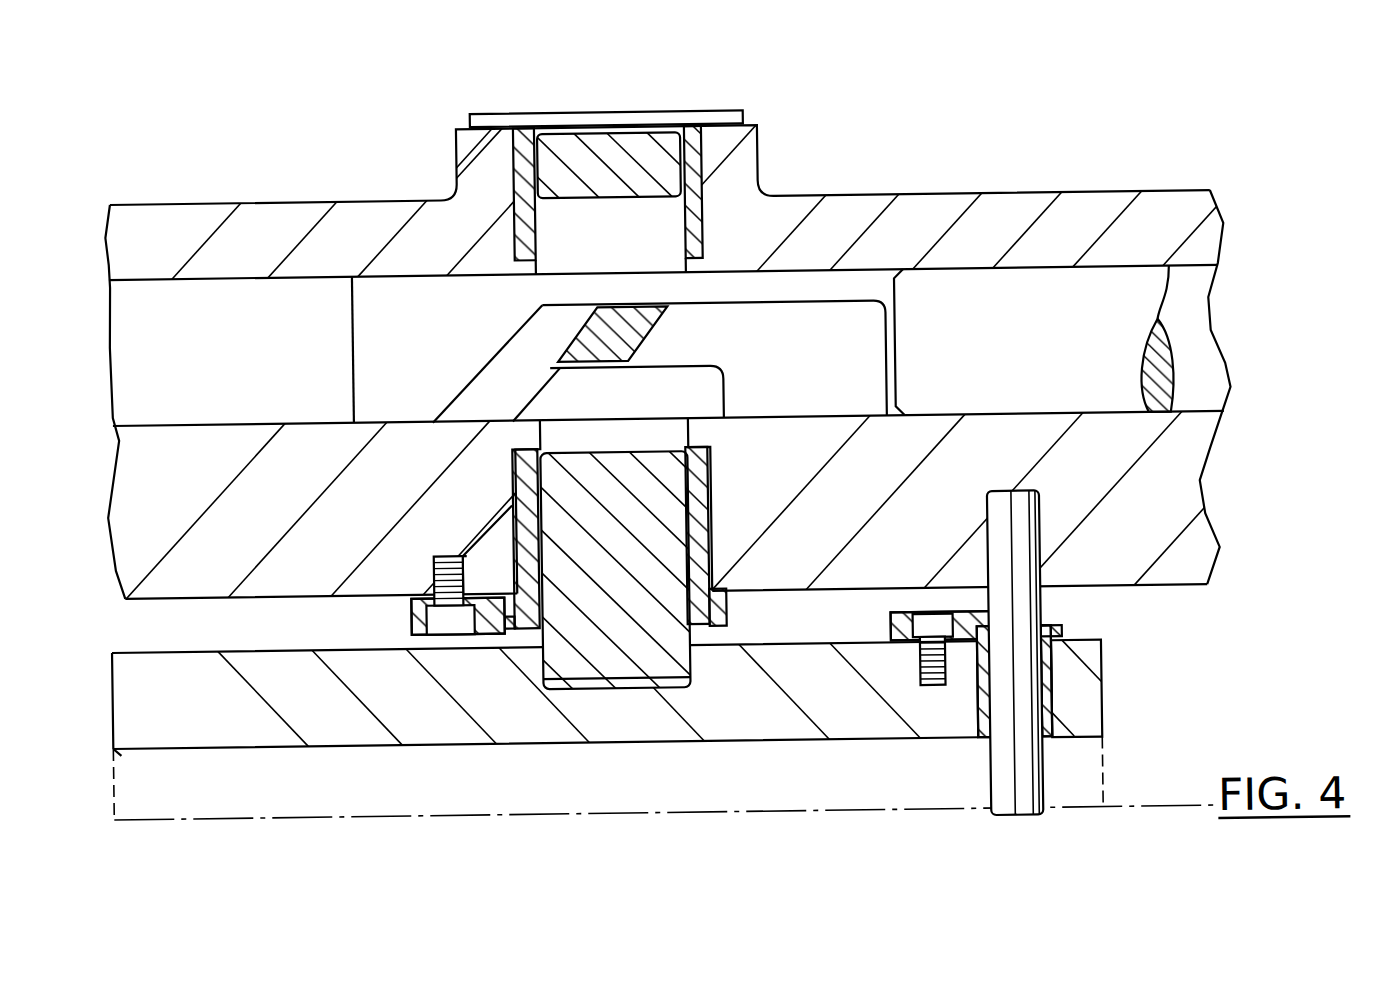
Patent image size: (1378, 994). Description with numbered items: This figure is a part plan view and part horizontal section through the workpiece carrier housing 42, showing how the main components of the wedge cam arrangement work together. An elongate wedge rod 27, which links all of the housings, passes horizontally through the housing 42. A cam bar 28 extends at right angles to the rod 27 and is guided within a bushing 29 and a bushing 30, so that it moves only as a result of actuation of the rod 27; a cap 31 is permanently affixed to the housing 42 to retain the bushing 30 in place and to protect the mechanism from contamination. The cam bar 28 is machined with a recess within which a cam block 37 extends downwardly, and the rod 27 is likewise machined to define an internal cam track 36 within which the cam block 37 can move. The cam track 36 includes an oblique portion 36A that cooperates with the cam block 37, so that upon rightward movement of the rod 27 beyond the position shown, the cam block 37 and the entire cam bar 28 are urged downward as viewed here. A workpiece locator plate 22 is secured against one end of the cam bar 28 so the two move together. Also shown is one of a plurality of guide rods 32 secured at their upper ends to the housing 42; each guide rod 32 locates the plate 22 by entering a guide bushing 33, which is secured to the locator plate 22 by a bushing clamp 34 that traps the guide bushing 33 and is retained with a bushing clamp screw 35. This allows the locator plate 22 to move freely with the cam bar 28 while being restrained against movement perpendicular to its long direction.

The workpiece locator plate 22 is at (1090, 708).
The wedge rod 27 is at (996, 287).
The cam bar 28 is at (648, 139).
The bushing 29 is at (726, 616).
The bushing 30 is at (702, 185).
The cap 31 is at (568, 109).
The guide rod 32 is at (1023, 819).
The guide bushing 33 is at (1050, 680).
The bushing clamp 34 is at (975, 624).
The bushing clamp screw 35 is at (928, 616).
The cam track 36 is at (816, 320).
The oblique portion 36A is at (460, 392).
The cam block 37 is at (588, 333).
The workpiece carrier housing 42 is at (203, 215).